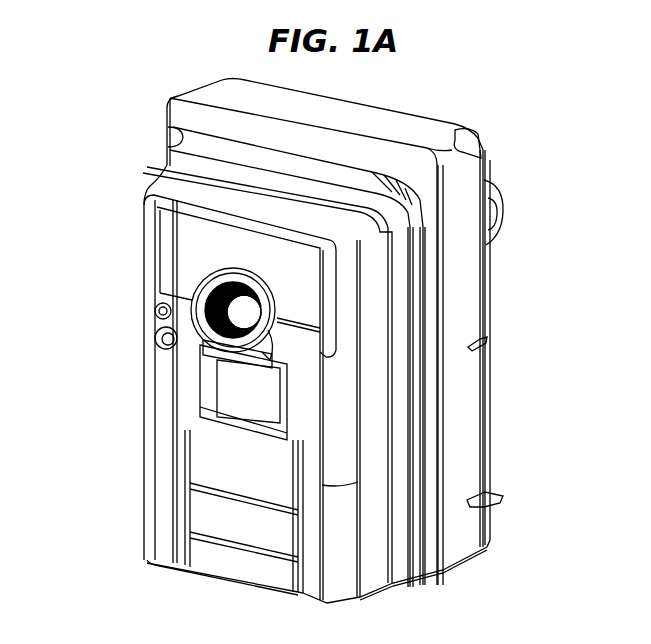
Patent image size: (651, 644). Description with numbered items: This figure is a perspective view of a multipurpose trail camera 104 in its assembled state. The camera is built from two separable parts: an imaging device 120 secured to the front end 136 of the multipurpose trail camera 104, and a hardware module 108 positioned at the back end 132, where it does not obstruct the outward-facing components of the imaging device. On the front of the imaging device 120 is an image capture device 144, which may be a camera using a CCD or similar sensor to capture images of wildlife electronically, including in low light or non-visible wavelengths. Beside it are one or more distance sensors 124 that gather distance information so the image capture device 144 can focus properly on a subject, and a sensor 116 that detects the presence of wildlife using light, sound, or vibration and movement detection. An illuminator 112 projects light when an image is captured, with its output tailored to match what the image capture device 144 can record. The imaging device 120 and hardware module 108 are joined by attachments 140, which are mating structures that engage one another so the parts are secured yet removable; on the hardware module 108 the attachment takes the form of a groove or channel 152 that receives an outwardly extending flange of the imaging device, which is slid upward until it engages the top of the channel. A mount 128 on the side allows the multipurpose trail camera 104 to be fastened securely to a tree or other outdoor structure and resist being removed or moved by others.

The multipurpose trail camera 104 is at (135, 114).
The hardware module 108 is at (436, 122).
The channel 152 is at (258, 173).
The imaging device 120 is at (163, 175).
The illuminator 112 is at (155, 235).
The image capture device 144 is at (212, 295).
The distance sensor 124 is at (157, 326).
The sensor 116 is at (212, 390).
The front end 136 is at (184, 579).
The attachment 140 is at (410, 587).
The back end 132 is at (503, 358).
The mount 128 is at (503, 197).